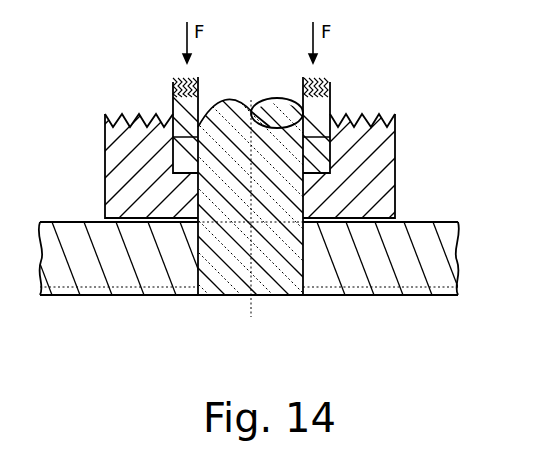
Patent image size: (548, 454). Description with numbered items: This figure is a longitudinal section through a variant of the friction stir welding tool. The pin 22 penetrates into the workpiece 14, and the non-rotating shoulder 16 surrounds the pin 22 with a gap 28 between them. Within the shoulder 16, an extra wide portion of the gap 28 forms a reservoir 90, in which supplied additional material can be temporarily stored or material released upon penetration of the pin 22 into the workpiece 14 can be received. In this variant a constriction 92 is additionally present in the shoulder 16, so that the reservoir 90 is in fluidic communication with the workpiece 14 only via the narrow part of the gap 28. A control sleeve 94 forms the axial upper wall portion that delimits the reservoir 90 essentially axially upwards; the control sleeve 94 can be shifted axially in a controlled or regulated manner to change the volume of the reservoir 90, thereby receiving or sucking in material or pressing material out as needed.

The workpiece 14 is at (387, 295).
The non-rotating shoulder 16 is at (252, 150).
The pin 22 is at (235, 296).
The gap 28 is at (256, 228).
The reservoir 90 is at (337, 160).
The constriction 92 is at (348, 210).
The control sleeve 94 is at (337, 100).